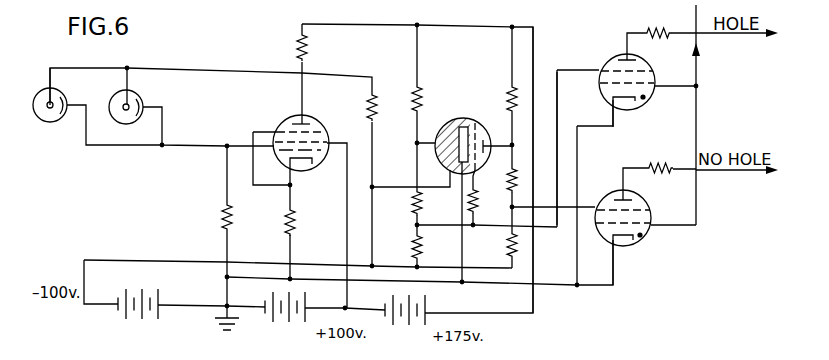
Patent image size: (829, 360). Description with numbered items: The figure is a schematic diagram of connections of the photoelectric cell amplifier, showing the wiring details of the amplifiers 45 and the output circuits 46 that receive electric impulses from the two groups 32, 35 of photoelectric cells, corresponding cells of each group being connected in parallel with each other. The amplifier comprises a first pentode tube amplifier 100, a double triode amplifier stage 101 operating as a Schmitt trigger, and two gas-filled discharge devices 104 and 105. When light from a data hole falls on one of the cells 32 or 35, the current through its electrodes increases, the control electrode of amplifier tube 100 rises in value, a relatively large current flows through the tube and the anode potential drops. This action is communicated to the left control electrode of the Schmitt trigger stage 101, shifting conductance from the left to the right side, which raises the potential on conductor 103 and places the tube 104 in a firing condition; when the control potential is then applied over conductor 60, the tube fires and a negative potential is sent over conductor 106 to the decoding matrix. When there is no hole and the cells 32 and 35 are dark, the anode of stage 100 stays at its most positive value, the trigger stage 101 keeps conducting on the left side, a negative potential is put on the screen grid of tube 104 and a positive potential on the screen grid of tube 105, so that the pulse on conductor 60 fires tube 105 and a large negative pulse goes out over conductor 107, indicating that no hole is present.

The photoelectric cell 32 is at (35, 100).
The photoelectric cell 35 is at (111, 103).
The amplifier 45 is at (275, 39).
The output circuit 46 is at (570, 40).
The conductor 60 is at (693, 20).
The first pentode tube amplifier 100 is at (282, 122).
The double triode amplifier stage 101 is at (478, 120).
The conductor 103 is at (558, 91).
The gas-filled discharge device 104 is at (645, 69).
The gas-filled discharge device 105 is at (648, 236).
The conductor 106 is at (728, 40).
The conductor 107 is at (742, 173).